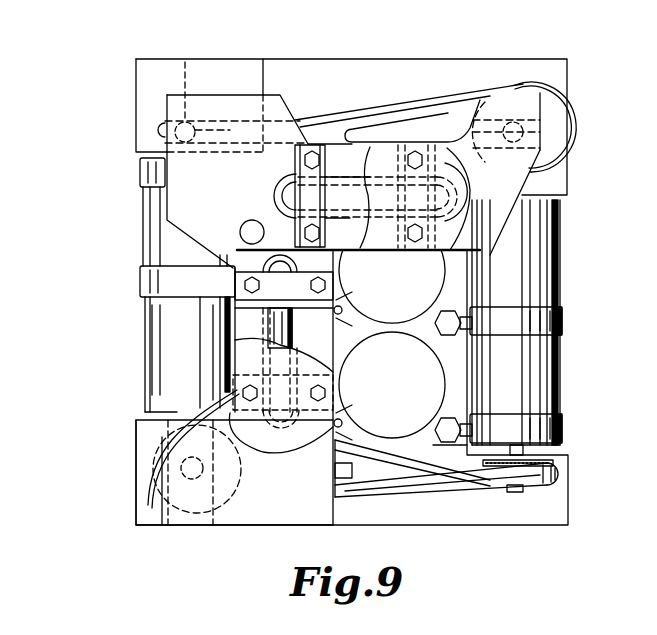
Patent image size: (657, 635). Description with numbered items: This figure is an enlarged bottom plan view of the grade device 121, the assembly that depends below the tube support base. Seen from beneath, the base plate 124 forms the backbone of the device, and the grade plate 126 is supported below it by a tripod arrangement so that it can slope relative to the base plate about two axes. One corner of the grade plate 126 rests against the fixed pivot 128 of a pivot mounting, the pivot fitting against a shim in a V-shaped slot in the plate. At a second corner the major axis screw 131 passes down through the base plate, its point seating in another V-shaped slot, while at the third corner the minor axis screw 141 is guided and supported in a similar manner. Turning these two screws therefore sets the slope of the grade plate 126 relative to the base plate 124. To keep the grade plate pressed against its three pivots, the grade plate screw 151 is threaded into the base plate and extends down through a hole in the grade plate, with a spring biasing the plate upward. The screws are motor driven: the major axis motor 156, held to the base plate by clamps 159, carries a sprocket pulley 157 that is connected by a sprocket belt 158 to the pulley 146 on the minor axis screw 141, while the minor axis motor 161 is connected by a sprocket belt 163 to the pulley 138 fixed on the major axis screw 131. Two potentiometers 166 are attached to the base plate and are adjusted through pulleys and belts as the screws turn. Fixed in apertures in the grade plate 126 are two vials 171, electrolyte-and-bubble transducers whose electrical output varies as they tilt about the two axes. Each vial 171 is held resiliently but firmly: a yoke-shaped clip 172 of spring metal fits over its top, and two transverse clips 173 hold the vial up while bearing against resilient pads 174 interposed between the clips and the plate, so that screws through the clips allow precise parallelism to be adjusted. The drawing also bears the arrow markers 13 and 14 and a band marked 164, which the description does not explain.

The first direction 13 is at (223, 288).
The second direction 14 is at (213, 343).
The grade device 121 is at (140, 371).
The base plate 124 is at (434, 59).
The grade plate 126 is at (180, 223).
The fixed pivot 128 is at (185, 60).
The major axis screw 131 is at (543, 95).
The pulley 138 is at (563, 125).
The minor axis screw 141 is at (163, 465).
The pulley 146 is at (160, 493).
The grade plate screw 151 is at (241, 228).
The major axis motor 156 is at (527, 386).
The sprocket pulley 157 is at (550, 487).
The sprocket belt 158 is at (408, 493).
The clamps 159 is at (550, 318).
The minor axis motor 161 is at (168, 357).
The sprocket belt 163 is at (163, 130).
The clamp 164 is at (140, 174).
The potentiometers 166 is at (424, 274).
The vials 171 is at (368, 207).
The yoke-shaped clip 172 is at (358, 165).
The transverse clips 173 is at (278, 193).
The resilient pads 174 is at (293, 163).